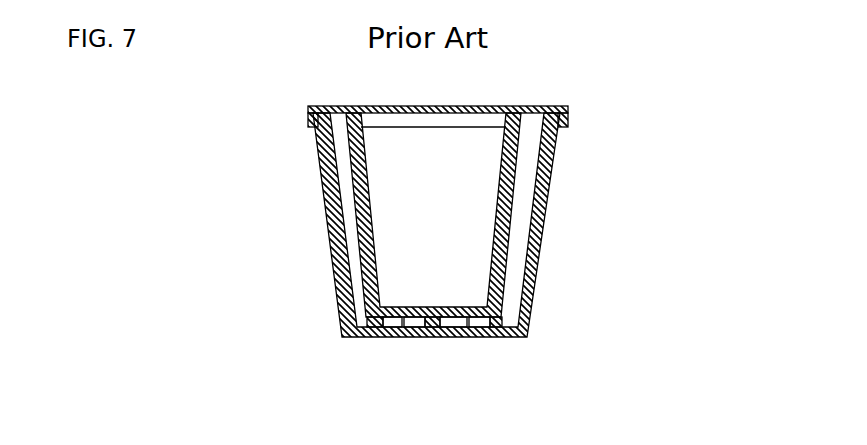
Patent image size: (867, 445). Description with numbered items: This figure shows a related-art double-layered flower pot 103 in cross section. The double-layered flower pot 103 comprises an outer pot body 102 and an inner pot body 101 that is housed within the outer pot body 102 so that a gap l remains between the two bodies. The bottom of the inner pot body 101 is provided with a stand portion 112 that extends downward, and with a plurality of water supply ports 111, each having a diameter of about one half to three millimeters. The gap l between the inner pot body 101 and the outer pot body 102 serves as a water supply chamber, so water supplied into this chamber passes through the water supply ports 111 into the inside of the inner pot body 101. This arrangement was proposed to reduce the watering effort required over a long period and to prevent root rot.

The double-layered flower pot 103 is at (543, 106).
The outer pot body 102 is at (328, 271).
The inner pot body 101 is at (508, 225).
The gap l is at (511, 265).
The water supply ports 111 is at (389, 339).
The stand portion 112 is at (341, 339).